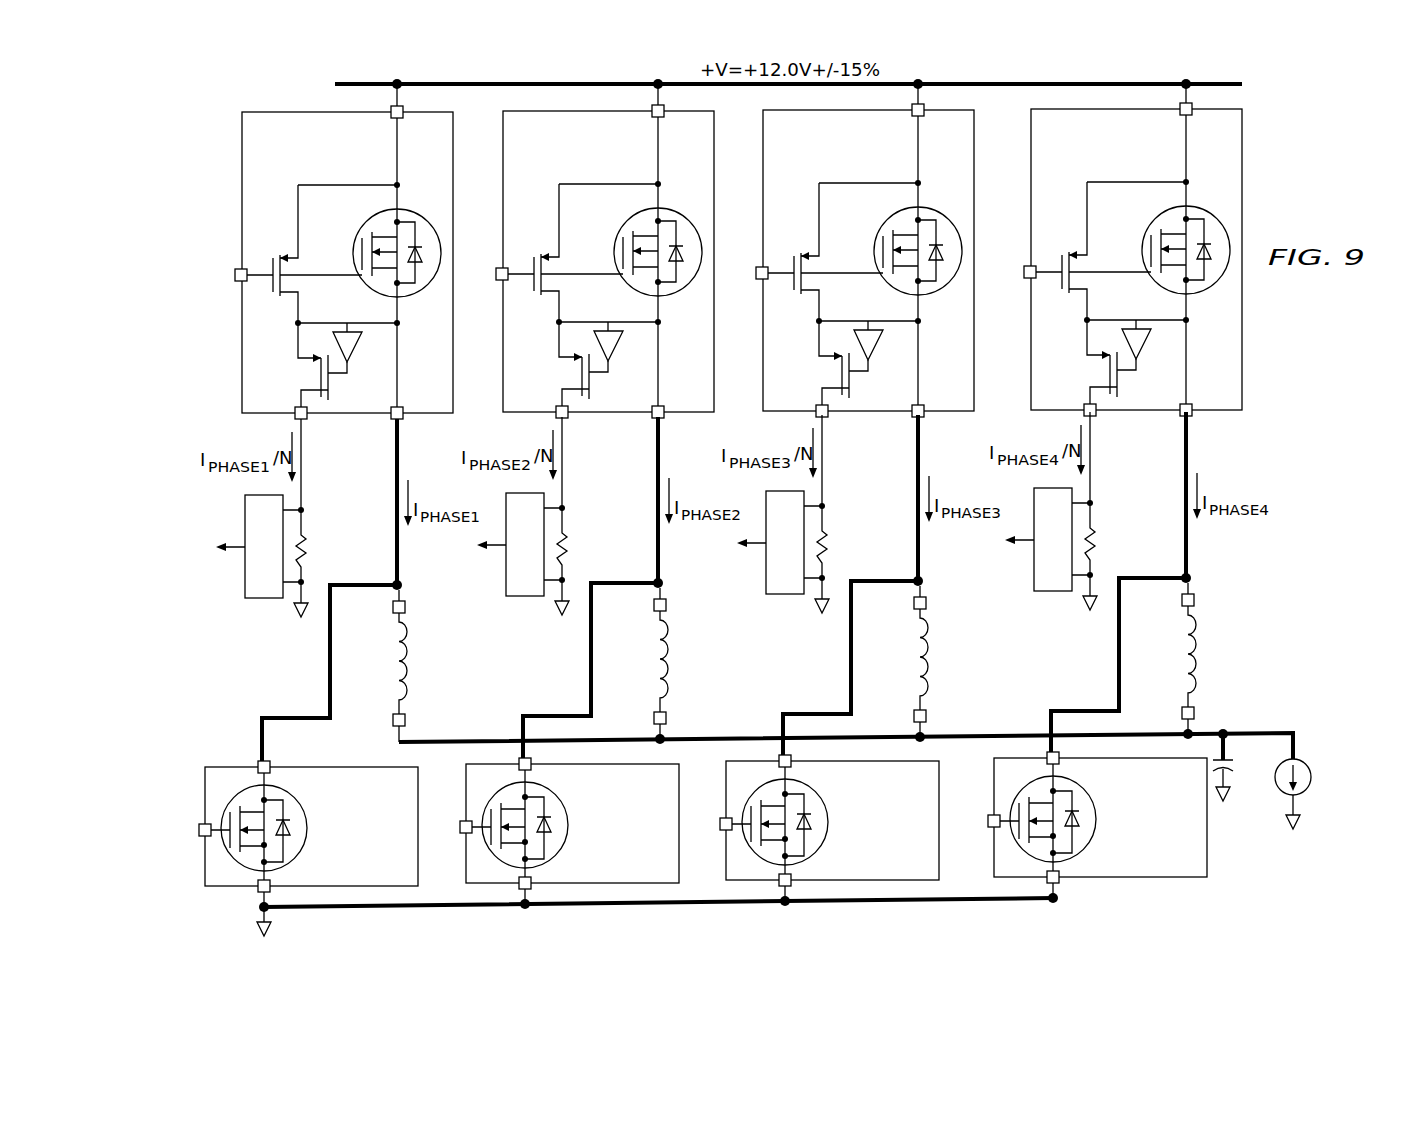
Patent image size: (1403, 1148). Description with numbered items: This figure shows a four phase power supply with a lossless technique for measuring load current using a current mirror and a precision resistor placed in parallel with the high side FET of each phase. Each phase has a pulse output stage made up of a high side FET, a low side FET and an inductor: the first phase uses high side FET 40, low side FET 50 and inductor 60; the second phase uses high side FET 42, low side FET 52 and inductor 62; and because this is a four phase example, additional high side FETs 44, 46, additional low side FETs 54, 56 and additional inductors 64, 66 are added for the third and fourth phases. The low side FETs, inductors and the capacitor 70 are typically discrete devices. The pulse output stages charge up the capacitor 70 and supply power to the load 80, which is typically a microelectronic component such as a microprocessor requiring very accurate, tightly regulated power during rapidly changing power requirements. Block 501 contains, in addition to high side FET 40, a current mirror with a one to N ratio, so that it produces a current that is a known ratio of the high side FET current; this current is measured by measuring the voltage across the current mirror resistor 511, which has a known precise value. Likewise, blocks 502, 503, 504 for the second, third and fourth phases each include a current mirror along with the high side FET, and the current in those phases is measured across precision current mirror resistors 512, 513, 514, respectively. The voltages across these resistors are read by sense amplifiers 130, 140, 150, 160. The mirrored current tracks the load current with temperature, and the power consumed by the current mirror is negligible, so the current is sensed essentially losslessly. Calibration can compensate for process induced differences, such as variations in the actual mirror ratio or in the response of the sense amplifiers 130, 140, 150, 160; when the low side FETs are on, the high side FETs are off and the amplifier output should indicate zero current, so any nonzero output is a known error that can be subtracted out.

The high side FET 40 is at (409, 213).
The high side FET 42 is at (659, 230).
The high side FET 44 is at (919, 229).
The high side FET 46 is at (1187, 228).
The block 501 is at (345, 424).
The block 502 is at (605, 278).
The block 503 is at (865, 277).
The block 504 is at (1133, 276).
The current mirror resistor 511 is at (305, 534).
The precision current mirror resistor 512 is at (590, 516).
The precision current mirror resistor 513 is at (850, 514).
The precision current mirror resistor 514 is at (1118, 511).
The sense amplifier 130 is at (270, 599).
The sense amplifier 140 is at (519, 570).
The sense amplifier 150 is at (779, 568).
The sense amplifier 160 is at (1047, 565).
The inductor 60 is at (414, 680).
The inductor 62 is at (689, 664).
The inductor 64 is at (949, 662).
The inductor 66 is at (1217, 659).
The low side FET 50 is at (305, 806).
The low side FET 52 is at (569, 823).
The low side FET 54 is at (829, 820).
The low side FET 56 is at (1097, 817).
The capacitor 70 is at (1236, 766).
The load 80 is at (1303, 792).